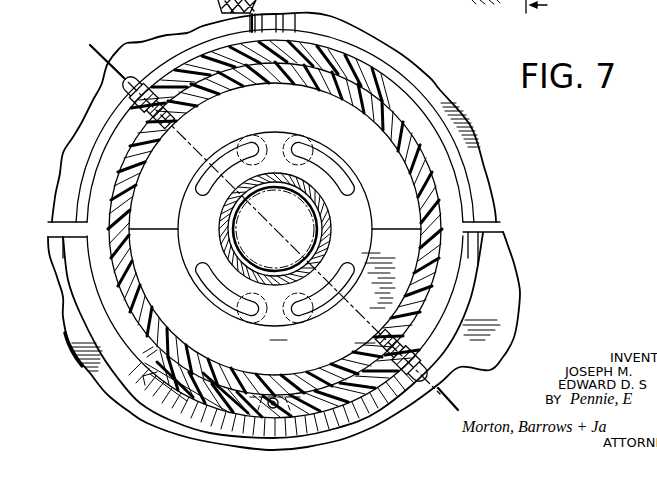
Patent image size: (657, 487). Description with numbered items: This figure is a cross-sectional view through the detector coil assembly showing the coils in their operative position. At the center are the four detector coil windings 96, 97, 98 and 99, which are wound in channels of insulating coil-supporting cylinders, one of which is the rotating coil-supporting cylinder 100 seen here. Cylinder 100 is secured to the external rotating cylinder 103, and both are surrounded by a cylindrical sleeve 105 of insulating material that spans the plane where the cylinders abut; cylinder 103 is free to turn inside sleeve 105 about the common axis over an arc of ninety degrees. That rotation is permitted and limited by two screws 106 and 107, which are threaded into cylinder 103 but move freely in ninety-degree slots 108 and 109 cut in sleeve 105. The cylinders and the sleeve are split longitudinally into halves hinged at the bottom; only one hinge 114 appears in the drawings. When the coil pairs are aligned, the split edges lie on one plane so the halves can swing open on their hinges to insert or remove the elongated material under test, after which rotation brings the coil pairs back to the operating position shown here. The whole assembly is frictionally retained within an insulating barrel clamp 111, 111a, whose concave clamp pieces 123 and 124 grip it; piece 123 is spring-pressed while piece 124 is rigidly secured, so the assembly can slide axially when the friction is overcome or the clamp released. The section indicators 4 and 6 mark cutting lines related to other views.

The section line 4- 4 is at (543, 7).
The section line 6- 6 is at (90, 56).
The detector coil winding 96 is at (301, 140).
The detector coil winding 97 is at (257, 325).
The detector coil winding 98 is at (258, 140).
The detector coil winding 99 is at (302, 320).
The rotating coil-supporting cylinder 100 is at (358, 202).
The external rotating cylinder 103 is at (417, 150).
The cylindrical sleeve 105 is at (158, 378).
The screw 106 is at (158, 62).
The screw 107 is at (423, 353).
The slot 108 is at (101, 177).
The slot 109 is at (453, 263).
The barrel clamp 111 is at (447, 93).
The barrel clamp 111a is at (367, 423).
The hinge 114 is at (262, 406).
The concave clamp piece 123 is at (460, 175).
The concave clamp piece 124 is at (83, 290).